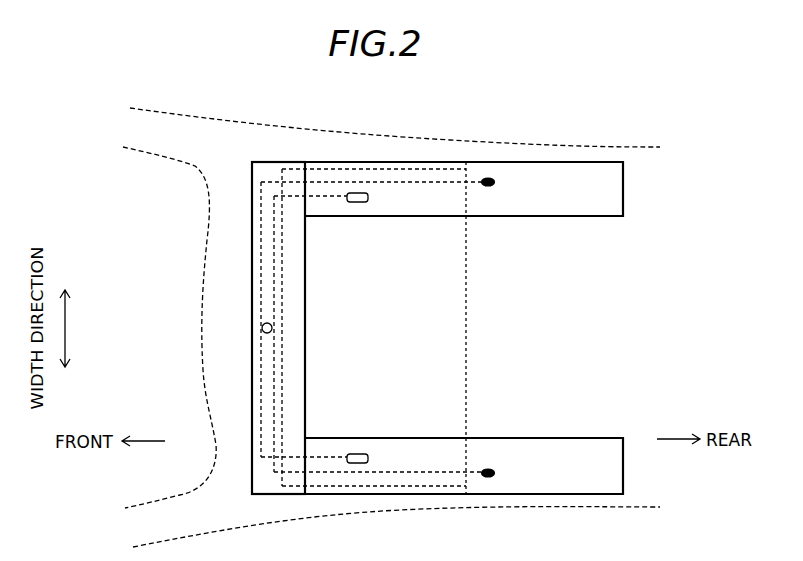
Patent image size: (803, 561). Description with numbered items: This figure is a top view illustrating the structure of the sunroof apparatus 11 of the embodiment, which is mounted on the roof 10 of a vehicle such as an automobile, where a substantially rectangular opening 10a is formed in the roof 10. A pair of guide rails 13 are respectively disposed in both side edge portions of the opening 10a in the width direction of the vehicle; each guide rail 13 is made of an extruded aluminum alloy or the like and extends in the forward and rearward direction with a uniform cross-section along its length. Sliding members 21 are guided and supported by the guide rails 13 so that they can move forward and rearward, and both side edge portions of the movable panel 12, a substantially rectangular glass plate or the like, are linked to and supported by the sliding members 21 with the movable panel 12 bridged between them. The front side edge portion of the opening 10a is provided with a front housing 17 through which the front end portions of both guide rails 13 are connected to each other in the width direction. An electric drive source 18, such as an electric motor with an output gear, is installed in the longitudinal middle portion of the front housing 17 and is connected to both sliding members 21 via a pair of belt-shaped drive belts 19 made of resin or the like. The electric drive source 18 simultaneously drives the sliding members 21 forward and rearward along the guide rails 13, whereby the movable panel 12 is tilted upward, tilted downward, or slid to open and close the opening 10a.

The roof 10 is at (462, 508).
The opening 10a is at (398, 338).
The sunroof apparatus 11 is at (571, 150).
The movable panel 12 is at (467, 322).
The guide rails 13 is at (422, 162).
The front housing 17 is at (252, 166).
The electric drive source 18 is at (262, 328).
The drive belts 19 is at (262, 390).
The sliding members 21 is at (358, 203).